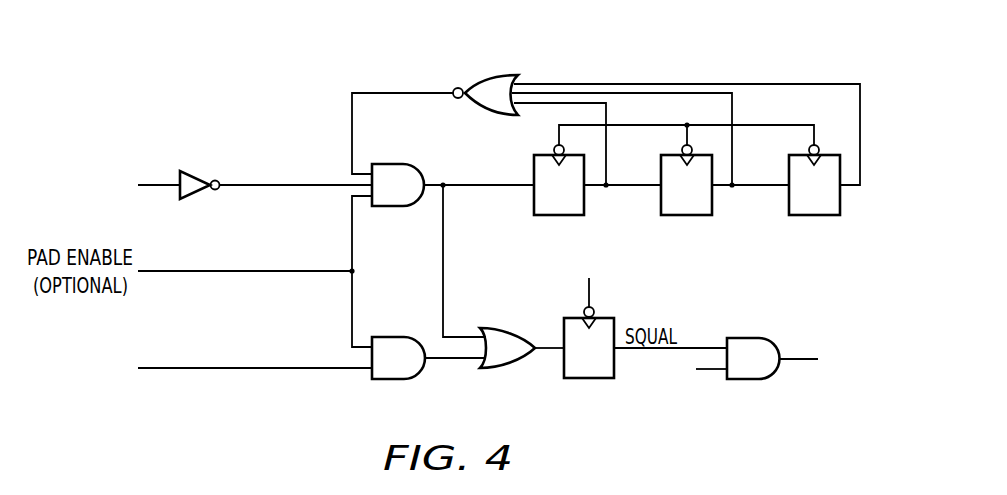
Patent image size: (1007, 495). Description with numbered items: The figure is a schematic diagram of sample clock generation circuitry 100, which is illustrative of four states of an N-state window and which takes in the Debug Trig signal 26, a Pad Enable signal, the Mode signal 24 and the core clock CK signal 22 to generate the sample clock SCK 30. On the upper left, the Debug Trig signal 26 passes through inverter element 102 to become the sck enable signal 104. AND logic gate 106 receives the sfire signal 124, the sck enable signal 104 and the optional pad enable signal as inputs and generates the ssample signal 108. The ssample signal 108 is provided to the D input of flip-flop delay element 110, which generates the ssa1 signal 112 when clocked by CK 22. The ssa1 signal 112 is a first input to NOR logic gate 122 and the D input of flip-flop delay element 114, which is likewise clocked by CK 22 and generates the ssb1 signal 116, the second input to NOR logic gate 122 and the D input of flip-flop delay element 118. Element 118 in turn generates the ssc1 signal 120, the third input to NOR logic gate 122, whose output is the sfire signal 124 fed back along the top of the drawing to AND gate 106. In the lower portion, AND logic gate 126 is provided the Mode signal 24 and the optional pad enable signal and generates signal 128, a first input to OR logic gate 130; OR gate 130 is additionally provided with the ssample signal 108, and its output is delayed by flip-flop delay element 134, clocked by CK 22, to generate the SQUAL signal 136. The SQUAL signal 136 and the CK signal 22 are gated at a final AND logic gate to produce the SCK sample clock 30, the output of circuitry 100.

The sample clock generation circuitry 100 is at (240, 83).
The inverter element 102 is at (198, 172).
The sck enable signal 104 is at (272, 187).
The AND logic gate 106 is at (397, 163).
The ssample signal 108 is at (499, 187).
The flip-flop delay element 110 is at (560, 217).
The ssa1 signal 112 is at (626, 188).
The flip-flop delay element 114 is at (687, 217).
The ssb1 signal 116 is at (752, 188).
The flip-flop delay element 118 is at (815, 217).
The ssc1 signal 120 is at (828, 86).
The NOR logic gate 122 is at (485, 73).
The sfire signal 124 is at (352, 137).
The AND logic gate 126 is at (397, 382).
The signal 128 is at (447, 360).
The OR logic gate 130 is at (514, 366).
The flip-flop delay element 134 is at (590, 379).
The SQUAL signal 136 is at (702, 347).
The core clock CK signal 22 is at (590, 291).
The Mode signal 24 is at (255, 370).
The Debug Trig signal 26 is at (163, 187).
The sample clock SCK 30 is at (798, 360).